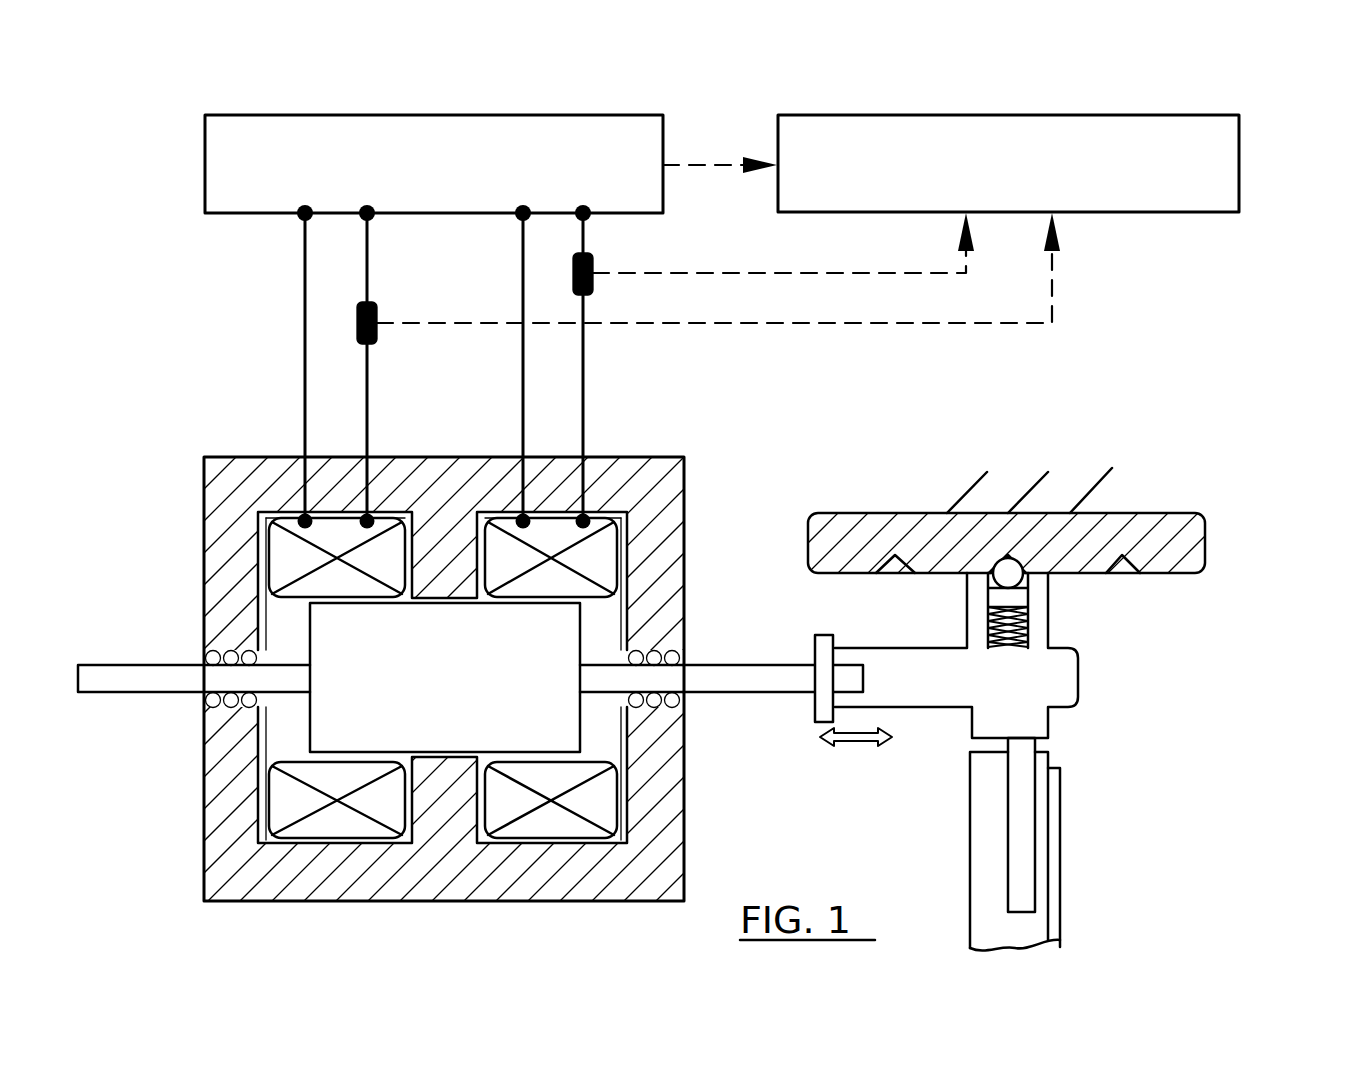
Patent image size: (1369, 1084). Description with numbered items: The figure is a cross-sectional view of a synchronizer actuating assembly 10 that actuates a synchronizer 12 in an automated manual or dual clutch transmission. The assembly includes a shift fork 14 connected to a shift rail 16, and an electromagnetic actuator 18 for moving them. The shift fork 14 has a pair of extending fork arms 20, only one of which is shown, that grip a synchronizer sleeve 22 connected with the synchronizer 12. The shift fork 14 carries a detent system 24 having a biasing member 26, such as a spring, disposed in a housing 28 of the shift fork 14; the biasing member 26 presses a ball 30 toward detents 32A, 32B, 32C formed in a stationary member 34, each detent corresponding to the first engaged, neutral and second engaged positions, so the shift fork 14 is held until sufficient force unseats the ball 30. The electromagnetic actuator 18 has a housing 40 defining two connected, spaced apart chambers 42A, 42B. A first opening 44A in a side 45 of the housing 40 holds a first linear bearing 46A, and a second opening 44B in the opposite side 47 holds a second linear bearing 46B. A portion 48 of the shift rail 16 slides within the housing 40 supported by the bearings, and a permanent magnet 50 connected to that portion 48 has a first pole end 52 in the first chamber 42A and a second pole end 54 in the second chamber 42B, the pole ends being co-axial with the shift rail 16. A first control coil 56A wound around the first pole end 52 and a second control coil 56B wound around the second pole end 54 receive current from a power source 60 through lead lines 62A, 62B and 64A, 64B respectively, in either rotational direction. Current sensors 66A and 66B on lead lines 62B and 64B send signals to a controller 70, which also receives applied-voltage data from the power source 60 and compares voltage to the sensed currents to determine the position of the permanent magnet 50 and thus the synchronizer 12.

The synchronizer actuating assembly 10 is at (1282, 121).
The synchronizer 12 is at (1070, 767).
The shift fork 14 is at (1090, 678).
The shift rail 16 is at (758, 692).
The electromagnetic actuator 18 is at (746, 420).
The fork arm 20 is at (1022, 870).
The synchronizer sleeve 22 is at (1040, 782).
The detent system 24 is at (807, 670).
The biasing member 26 is at (106, 672).
The housing 28 is at (1050, 593).
The ball 30 is at (1013, 565).
The detent 32A is at (900, 571).
The detent 32B is at (1010, 568).
The detent 32C is at (1125, 573).
The housing or member 34 is at (1207, 539).
The housing 40 is at (686, 483).
The first chamber 42A is at (621, 574).
The second chamber 42B is at (266, 521).
The first opening 44A is at (688, 662).
The second opening 44B is at (206, 696).
The side 45 is at (686, 533).
The first linear bearing 46A is at (684, 697).
The second linear bearing 46B is at (206, 652).
The side 47 is at (205, 838).
The portion of the shift rail 48 is at (291, 660).
The permanent magnet 50 is at (467, 693).
The first pole end 52 is at (575, 752).
The second pole end 54 is at (327, 722).
The first control coil 56A is at (608, 547).
The second control coil 56B is at (392, 545).
The power source 60 is at (462, 179).
The first lead line 62A is at (522, 246).
The second lead line 62B is at (583, 393).
The first lead line 64A is at (305, 265).
The second lead line 64B is at (367, 393).
The current sensor 66A is at (594, 262).
The current sensor 66B is at (378, 312).
The controller 70 is at (1024, 181).